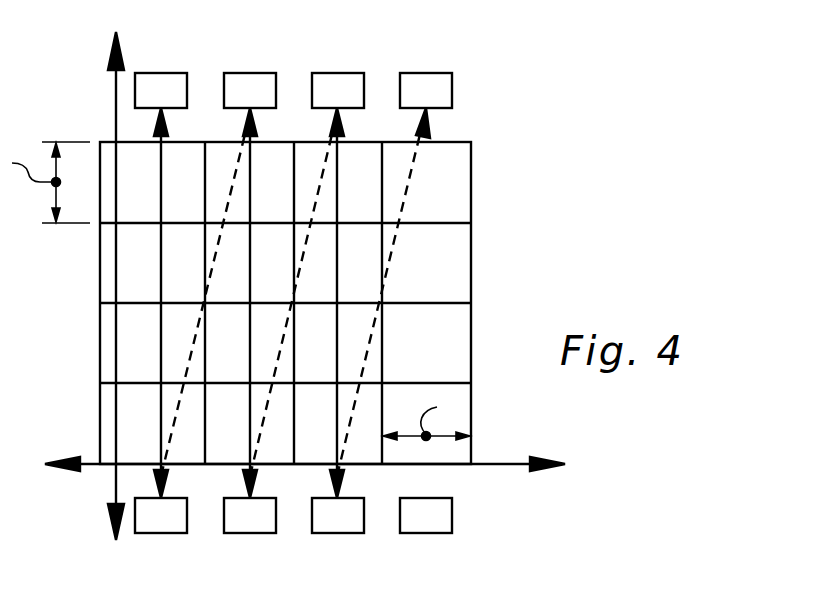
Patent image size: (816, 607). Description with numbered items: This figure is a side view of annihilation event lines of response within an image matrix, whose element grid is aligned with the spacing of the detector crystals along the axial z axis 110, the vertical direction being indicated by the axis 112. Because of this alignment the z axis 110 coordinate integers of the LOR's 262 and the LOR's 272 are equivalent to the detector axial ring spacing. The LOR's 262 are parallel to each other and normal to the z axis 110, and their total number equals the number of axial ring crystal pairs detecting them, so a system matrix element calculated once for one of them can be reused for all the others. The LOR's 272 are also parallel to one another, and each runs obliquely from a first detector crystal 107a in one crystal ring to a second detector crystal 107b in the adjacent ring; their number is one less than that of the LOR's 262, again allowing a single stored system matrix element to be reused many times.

The z axis 110 is at (100, 462).
The y axis 112 is at (116, 101).
The first detector crystal 107a is at (452, 516).
The second detector crystal 107b is at (452, 83).
The LOR's 262 is at (161, 262).
The LOR's 272 is at (410, 183).